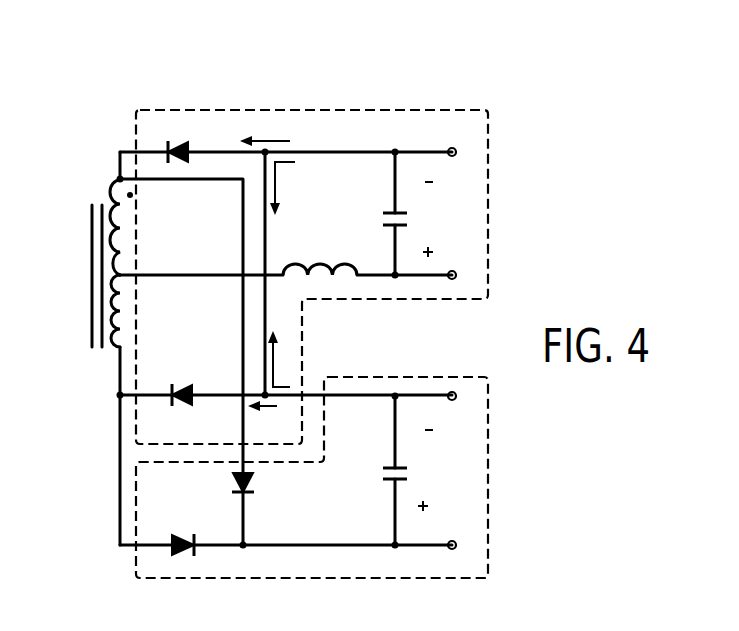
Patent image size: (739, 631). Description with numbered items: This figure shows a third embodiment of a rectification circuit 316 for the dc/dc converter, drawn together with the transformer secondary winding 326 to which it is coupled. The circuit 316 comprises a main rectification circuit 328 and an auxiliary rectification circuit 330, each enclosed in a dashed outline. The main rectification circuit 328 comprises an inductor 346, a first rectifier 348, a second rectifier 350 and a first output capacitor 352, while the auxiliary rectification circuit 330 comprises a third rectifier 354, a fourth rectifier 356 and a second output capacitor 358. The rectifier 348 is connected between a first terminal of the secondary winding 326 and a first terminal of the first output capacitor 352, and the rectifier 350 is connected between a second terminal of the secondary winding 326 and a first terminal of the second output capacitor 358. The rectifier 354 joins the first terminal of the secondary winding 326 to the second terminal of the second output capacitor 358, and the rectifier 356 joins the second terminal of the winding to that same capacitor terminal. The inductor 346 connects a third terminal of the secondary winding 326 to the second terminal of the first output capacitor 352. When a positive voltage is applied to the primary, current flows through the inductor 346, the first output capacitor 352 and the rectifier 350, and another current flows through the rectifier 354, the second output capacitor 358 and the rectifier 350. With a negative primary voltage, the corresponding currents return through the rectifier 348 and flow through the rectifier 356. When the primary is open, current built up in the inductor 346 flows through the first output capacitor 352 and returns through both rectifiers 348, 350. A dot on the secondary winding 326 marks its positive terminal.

The rectification circuit 316 is at (100, 88).
The secondary winding 326 is at (118, 348).
The main rectification circuit 328 is at (348, 301).
The auxiliary rectification circuit 330 is at (418, 373).
The inductor 346 is at (330, 265).
The first rectifier 348 is at (178, 150).
The second rectifier 350 is at (182, 382).
The first output capacitor 352 is at (392, 210).
The third rectifier 354 is at (252, 481).
The fourth rectifier 356 is at (182, 537).
The second output capacitor 358 is at (392, 467).